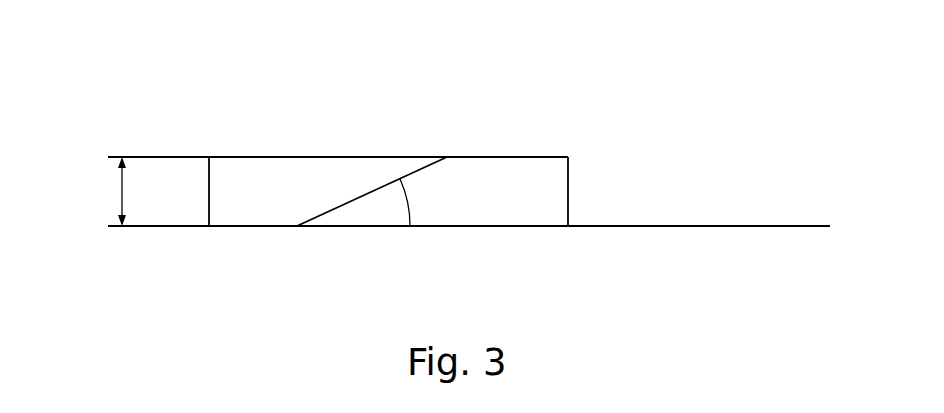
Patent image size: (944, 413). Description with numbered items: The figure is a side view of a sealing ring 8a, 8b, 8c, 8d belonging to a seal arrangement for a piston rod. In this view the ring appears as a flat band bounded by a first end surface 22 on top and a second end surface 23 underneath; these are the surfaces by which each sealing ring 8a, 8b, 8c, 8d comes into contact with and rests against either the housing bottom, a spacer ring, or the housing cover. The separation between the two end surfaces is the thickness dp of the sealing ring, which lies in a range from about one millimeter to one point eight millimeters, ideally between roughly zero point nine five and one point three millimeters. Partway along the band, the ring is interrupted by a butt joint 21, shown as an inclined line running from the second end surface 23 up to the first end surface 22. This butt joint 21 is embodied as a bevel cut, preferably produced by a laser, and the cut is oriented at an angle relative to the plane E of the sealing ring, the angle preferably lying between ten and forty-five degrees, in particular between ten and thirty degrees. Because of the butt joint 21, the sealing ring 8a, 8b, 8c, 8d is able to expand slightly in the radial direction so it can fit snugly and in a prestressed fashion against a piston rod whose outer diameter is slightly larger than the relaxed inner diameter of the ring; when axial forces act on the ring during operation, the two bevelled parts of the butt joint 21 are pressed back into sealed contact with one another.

The sealing ring 8a is at (491, 152).
The sealing ring 8b is at (491, 152).
The sealing ring 8c is at (491, 152).
The sealing ring 8d is at (568, 157).
The butt joint 21 is at (380, 186).
The first end surface 22 is at (231, 157).
The second end surface 23 is at (238, 228).
The plane of the sealing ring E is at (667, 227).
The thickness dp is at (118, 196).